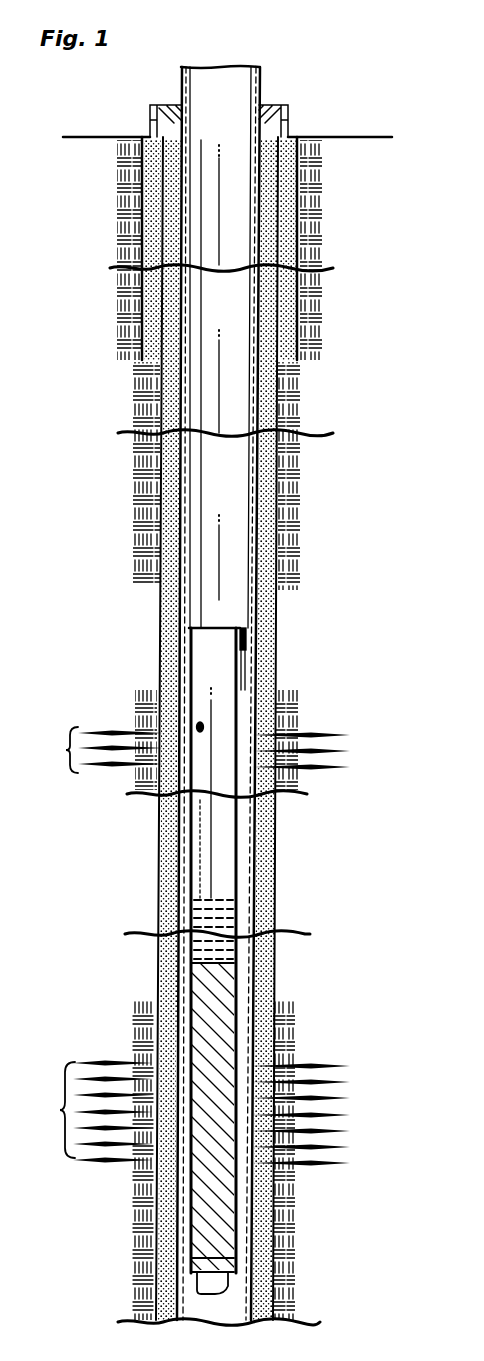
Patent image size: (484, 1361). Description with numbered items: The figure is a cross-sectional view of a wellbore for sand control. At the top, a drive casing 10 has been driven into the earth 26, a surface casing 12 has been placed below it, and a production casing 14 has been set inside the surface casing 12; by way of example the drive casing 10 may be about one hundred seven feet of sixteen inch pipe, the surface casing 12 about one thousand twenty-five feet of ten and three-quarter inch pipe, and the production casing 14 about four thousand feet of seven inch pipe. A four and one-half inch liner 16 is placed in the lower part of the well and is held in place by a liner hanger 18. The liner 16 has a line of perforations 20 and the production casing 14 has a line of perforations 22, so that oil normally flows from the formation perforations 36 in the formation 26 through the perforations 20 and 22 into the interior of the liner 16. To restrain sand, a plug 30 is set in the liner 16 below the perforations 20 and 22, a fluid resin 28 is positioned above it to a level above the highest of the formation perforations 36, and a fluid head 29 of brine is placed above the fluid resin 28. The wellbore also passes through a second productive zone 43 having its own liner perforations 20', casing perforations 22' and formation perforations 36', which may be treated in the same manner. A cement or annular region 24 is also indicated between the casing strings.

The drive casing 10 is at (298, 133).
The surface casing 12 is at (150, 127).
The production casing 14 is at (263, 76).
The liner 16 is at (250, 655).
The liner hanger 18 is at (224, 630).
The liner perforations 20' is at (140, 717).
The production casing perforations 22' is at (133, 775).
The formation perforations 36' is at (194, 750).
The zone 43 is at (140, 687).
The liner perforations 20 is at (141, 1026).
The production casing perforations 22 is at (138, 1095).
The cement 24 is at (273, 955).
The earth 26 is at (116, 222).
The fluid resin 28 is at (223, 1000).
The fluid head 29 is at (196, 951).
The plug 30 is at (240, 1294).
The formation perforations 36 is at (190, 1113).